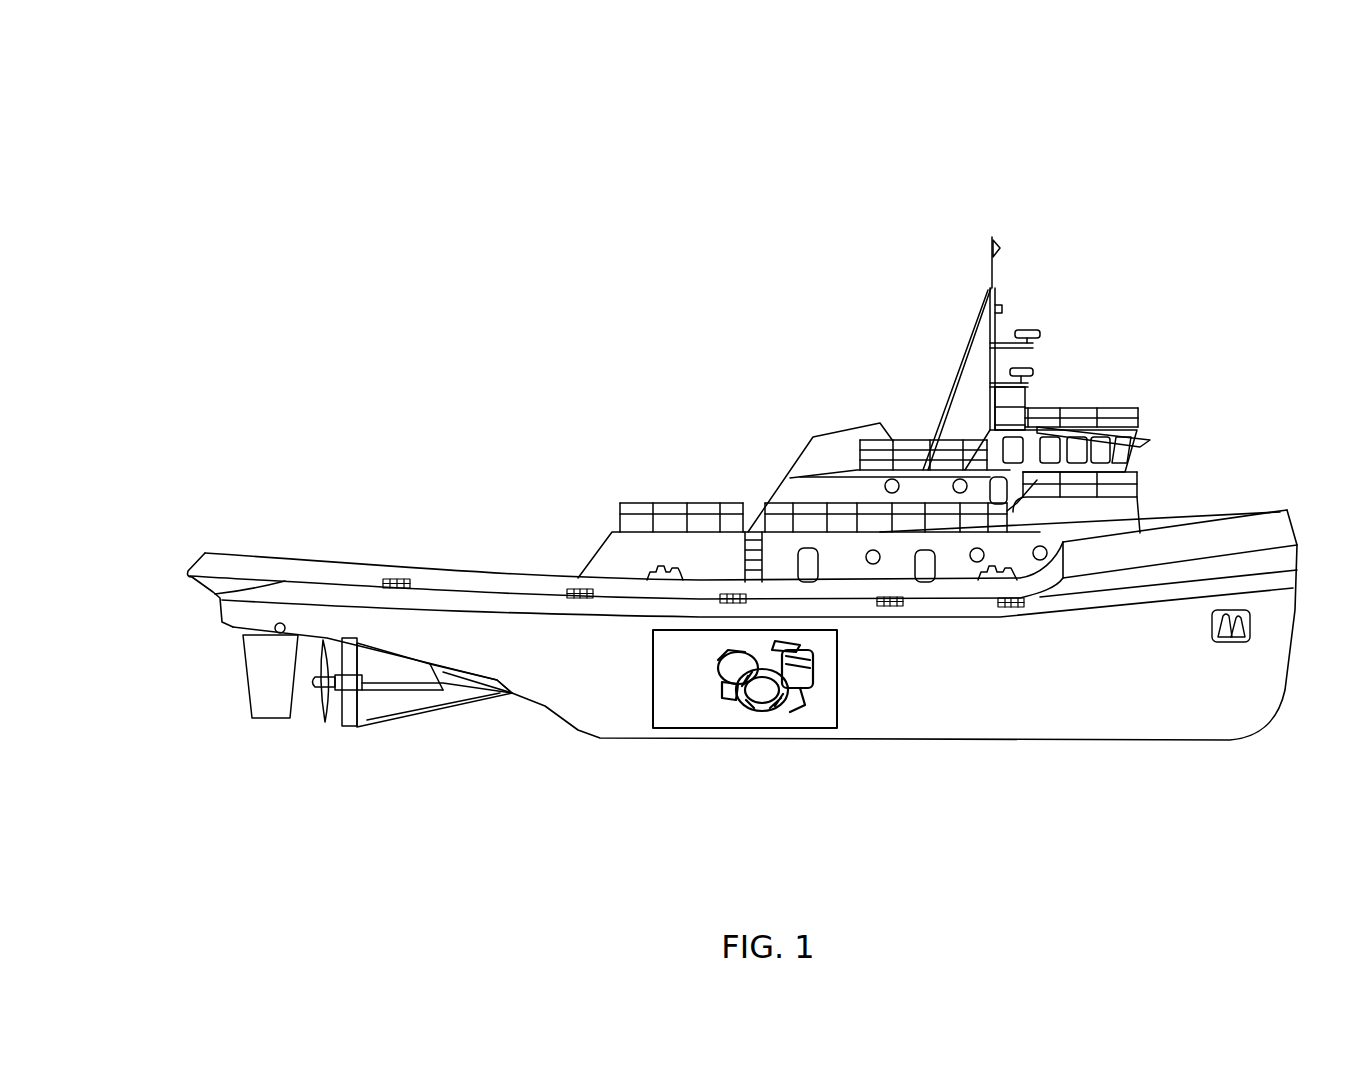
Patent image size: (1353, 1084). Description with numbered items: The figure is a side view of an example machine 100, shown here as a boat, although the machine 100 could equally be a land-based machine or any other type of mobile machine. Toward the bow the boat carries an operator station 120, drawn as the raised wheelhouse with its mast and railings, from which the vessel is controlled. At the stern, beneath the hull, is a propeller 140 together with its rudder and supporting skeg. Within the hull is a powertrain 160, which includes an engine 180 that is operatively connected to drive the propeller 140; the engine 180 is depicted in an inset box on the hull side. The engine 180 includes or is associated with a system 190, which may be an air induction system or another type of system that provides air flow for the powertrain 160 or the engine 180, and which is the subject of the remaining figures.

The machine 100 is at (177, 68).
The operator station 120 is at (1080, 408).
The propeller 140 is at (321, 736).
The powertrain 160 is at (797, 750).
The engine 180 is at (702, 717).
The system 190 is at (773, 630).